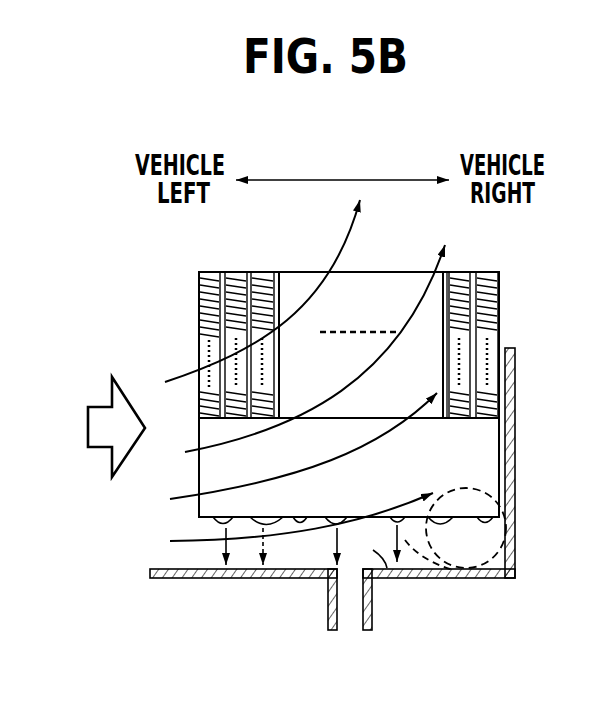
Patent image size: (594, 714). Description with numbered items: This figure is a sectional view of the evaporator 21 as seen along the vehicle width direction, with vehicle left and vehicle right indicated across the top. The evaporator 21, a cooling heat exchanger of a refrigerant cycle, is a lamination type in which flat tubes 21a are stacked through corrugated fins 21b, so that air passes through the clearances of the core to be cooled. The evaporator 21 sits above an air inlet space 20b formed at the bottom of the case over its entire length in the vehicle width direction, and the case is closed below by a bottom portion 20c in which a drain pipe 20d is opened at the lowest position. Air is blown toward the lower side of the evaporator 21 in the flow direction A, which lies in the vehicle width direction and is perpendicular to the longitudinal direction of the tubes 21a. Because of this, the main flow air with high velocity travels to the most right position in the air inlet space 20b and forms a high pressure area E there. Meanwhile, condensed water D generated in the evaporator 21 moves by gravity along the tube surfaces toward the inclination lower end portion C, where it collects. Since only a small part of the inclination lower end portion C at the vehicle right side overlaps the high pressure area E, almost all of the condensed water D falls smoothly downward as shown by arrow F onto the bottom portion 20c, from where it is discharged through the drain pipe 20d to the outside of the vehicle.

The evaporator 21 is at (400, 268).
The tube 21a is at (499, 279).
The corrugated fin 21b is at (499, 311).
The air inlet space 20b is at (388, 578).
The bottom portion 20c is at (230, 580).
The drain pipe 20d is at (350, 612).
The flow direction of air A is at (102, 418).
The inclination lower end portion C is at (303, 521).
The condensed water D is at (217, 523).
The high pressure area E is at (490, 478).
The arrow showing falling of condensed water F is at (430, 510).